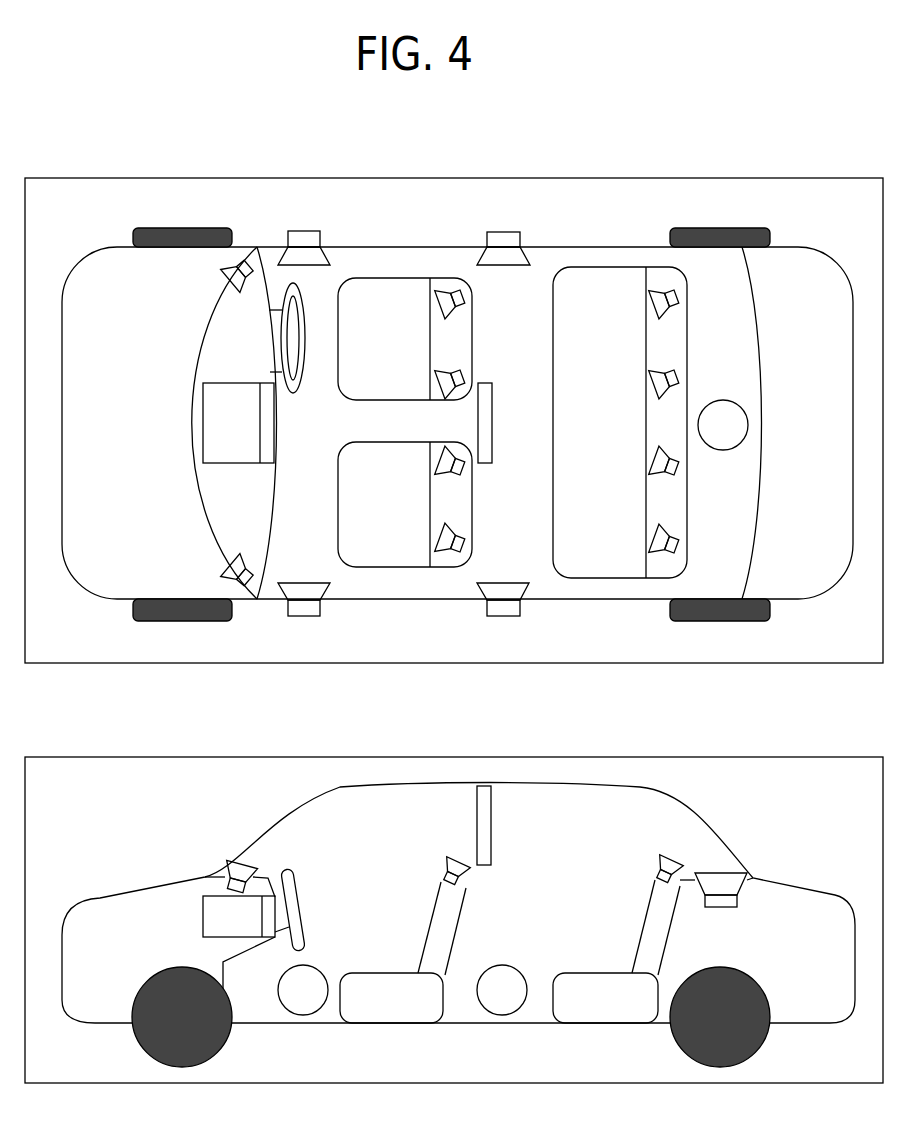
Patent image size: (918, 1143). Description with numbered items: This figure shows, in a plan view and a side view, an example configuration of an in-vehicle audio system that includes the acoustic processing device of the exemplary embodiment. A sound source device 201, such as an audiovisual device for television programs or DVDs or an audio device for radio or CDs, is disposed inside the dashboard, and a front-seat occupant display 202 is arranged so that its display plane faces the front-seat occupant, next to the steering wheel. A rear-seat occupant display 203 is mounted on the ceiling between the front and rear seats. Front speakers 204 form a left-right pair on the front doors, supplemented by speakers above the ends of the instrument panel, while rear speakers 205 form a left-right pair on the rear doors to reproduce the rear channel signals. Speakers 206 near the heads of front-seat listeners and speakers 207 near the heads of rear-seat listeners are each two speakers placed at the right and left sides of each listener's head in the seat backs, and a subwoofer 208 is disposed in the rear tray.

The sound source device 201 is at (239, 660).
The front-seat occupant display 202 is at (275, 915).
The rear-seat occupant display 203 is at (505, 624).
The front speakers 204 is at (280, 990).
The rear speakers 205 is at (503, 611).
The speakers near heads of listeners on front seats 206 is at (405, 650).
The speakers near heads of listeners on rear seats 207 is at (620, 645).
The subwoofer 208 is at (721, 654).